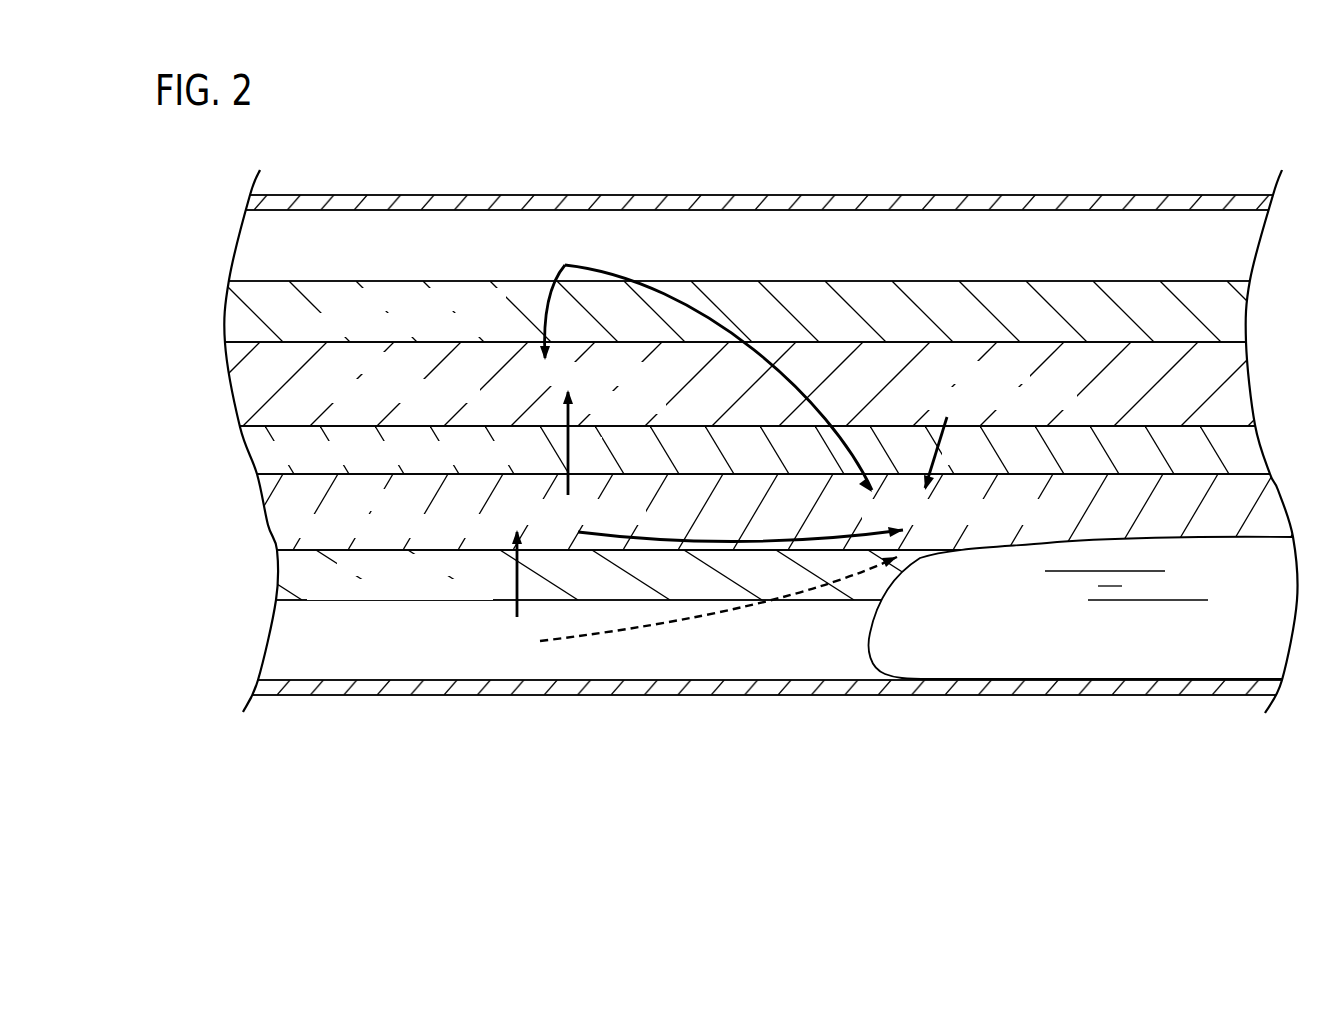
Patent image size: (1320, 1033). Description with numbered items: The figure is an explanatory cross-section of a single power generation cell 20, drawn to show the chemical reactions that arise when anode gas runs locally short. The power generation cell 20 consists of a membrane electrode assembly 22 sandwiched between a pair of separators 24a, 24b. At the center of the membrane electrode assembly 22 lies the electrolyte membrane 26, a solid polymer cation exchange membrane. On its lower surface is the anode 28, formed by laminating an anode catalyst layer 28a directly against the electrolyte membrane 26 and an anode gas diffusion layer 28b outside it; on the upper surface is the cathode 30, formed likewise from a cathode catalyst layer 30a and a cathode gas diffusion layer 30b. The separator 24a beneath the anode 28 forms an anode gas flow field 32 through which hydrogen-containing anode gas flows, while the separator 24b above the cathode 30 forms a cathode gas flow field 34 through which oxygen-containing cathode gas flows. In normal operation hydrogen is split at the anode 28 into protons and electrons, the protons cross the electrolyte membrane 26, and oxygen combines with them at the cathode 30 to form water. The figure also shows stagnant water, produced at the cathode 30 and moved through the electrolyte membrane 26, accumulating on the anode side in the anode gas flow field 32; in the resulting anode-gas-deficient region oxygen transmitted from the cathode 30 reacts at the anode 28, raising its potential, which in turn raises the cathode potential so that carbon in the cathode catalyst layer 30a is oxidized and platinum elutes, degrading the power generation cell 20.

The power generation cell 20 is at (716, 112).
The membrane electrode assembly 22 is at (712, 413).
The separator 24a is at (538, 690).
The separator 24b is at (578, 203).
The electrolyte membrane 26 is at (262, 448).
The anode 28 is at (731, 538).
The anode catalyst layer 28a is at (280, 520).
The anode gas diffusion layer 28b is at (290, 573).
The cathode 30 is at (712, 353).
The cathode catalyst layer 30a is at (253, 380).
The cathode gas diffusion layer 30b is at (237, 325).
The anode gas flow field 32 is at (441, 653).
The cathode gas flow field 34 is at (485, 230).